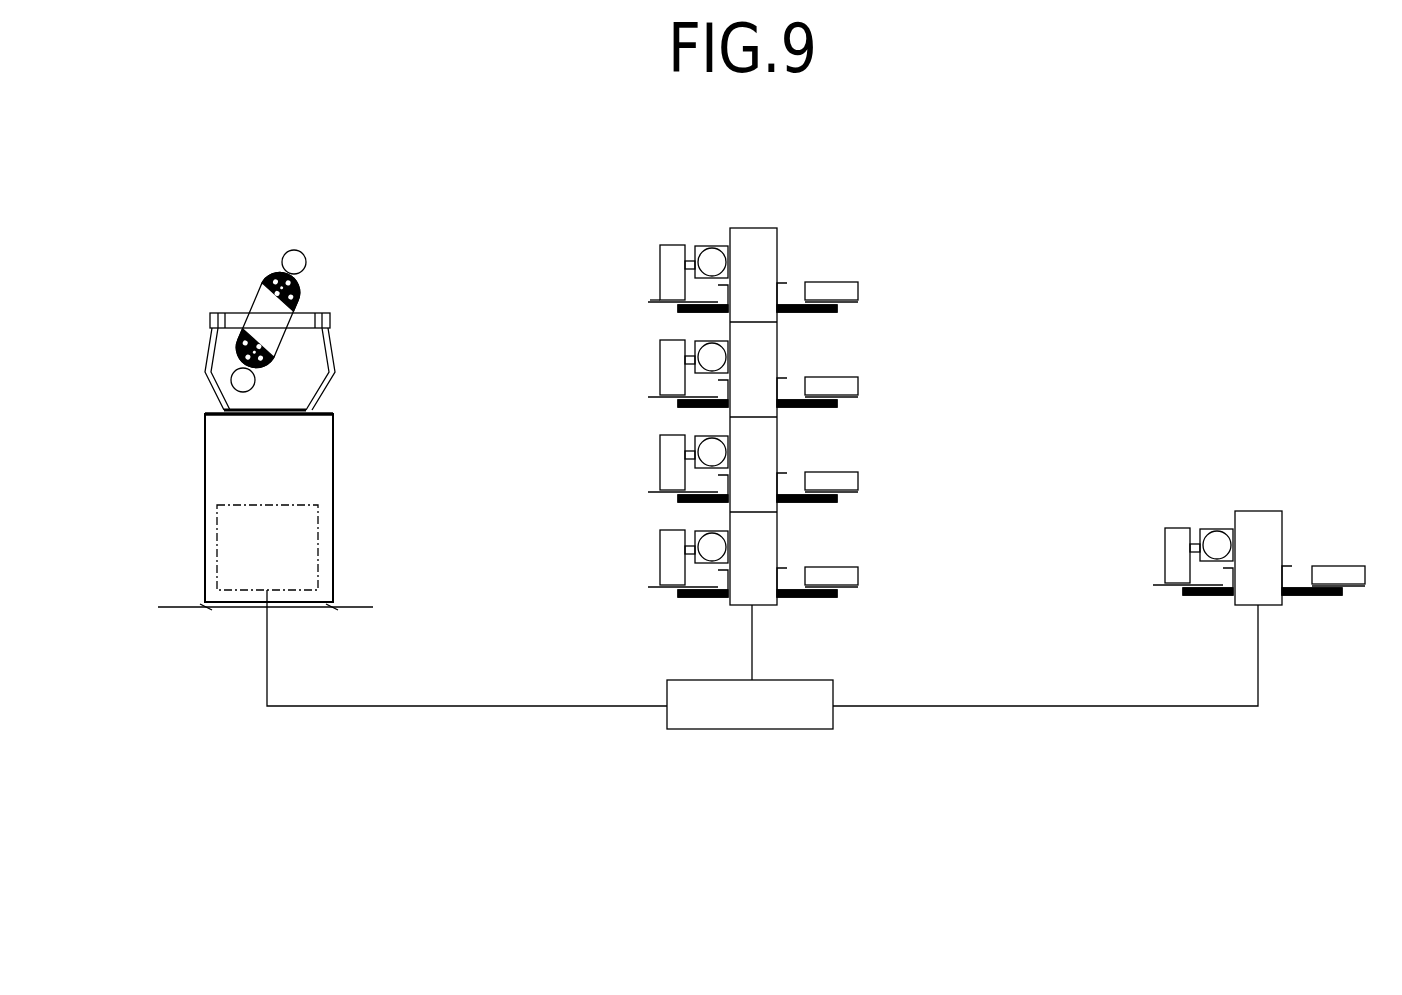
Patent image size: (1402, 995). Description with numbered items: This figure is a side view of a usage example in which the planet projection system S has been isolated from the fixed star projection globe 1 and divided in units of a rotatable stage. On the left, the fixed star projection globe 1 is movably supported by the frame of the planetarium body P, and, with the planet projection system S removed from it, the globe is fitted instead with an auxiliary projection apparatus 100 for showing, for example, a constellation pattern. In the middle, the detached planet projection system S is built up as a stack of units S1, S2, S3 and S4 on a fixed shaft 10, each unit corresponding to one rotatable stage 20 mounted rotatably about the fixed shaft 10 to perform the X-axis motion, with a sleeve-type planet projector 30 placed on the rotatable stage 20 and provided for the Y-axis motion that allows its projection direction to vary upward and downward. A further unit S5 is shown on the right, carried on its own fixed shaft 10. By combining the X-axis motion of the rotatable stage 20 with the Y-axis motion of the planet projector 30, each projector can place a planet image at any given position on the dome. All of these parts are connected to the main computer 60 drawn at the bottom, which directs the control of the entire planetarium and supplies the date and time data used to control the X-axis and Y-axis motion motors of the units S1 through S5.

The fixed star projection globe 1 is at (306, 287).
The auxiliary projection apparatus 100 is at (306, 249).
The planetarium body P is at (325, 472).
The fixed shaft 10 is at (763, 226).
The rotatable stage 20 is at (652, 304).
The sleeve-type planet projector 30 is at (707, 250).
The planet projection system S is at (822, 252).
The planet projection system unit S1 is at (712, 268).
The planet projection system unit S2 is at (650, 373).
The planet projection system unit S3 is at (650, 468).
The planet projection system unit S4 is at (650, 560).
The planet projection system unit S5 is at (1157, 557).
The main computer 60 is at (800, 722).